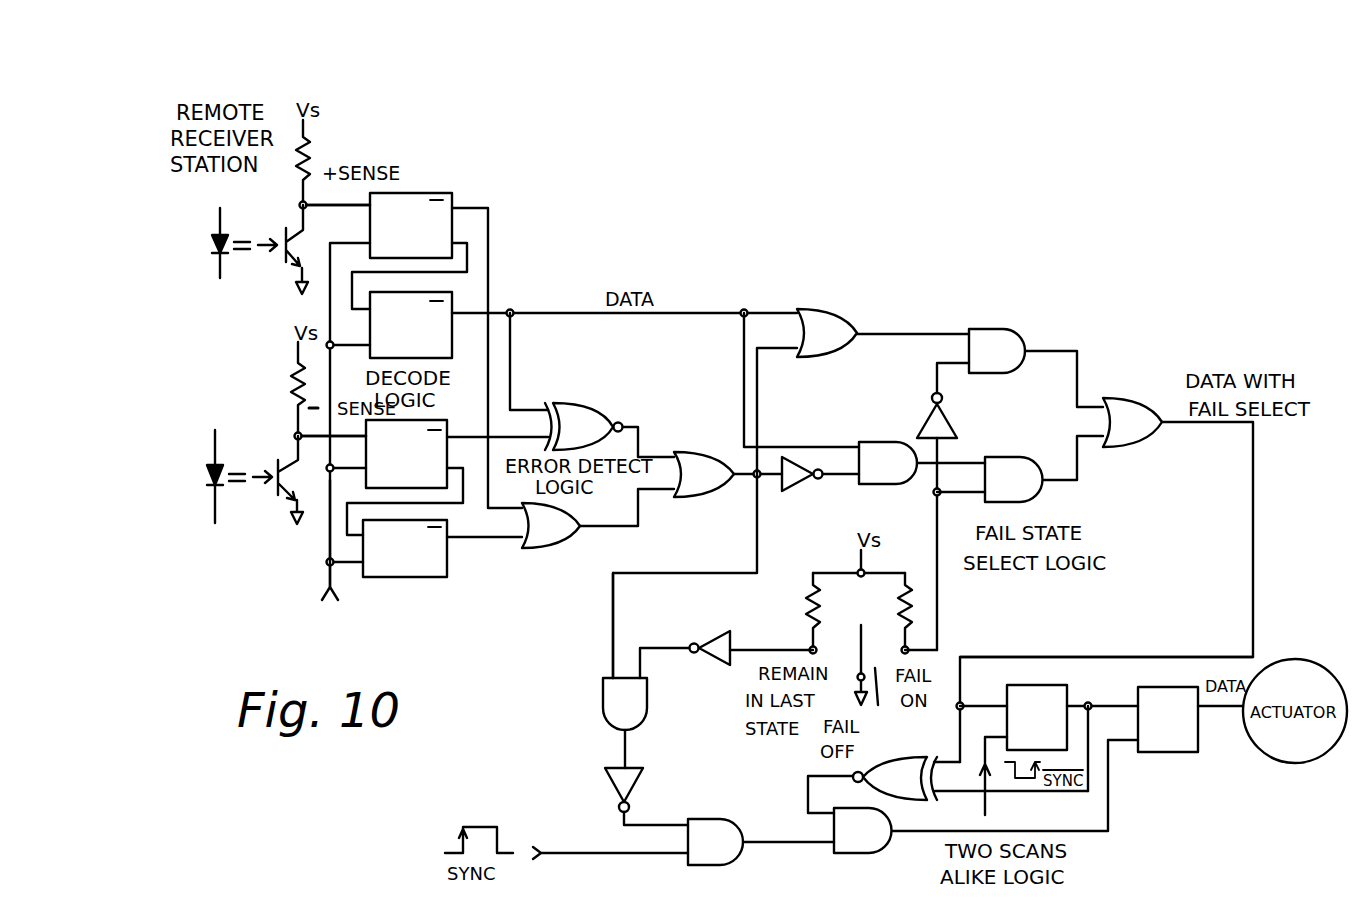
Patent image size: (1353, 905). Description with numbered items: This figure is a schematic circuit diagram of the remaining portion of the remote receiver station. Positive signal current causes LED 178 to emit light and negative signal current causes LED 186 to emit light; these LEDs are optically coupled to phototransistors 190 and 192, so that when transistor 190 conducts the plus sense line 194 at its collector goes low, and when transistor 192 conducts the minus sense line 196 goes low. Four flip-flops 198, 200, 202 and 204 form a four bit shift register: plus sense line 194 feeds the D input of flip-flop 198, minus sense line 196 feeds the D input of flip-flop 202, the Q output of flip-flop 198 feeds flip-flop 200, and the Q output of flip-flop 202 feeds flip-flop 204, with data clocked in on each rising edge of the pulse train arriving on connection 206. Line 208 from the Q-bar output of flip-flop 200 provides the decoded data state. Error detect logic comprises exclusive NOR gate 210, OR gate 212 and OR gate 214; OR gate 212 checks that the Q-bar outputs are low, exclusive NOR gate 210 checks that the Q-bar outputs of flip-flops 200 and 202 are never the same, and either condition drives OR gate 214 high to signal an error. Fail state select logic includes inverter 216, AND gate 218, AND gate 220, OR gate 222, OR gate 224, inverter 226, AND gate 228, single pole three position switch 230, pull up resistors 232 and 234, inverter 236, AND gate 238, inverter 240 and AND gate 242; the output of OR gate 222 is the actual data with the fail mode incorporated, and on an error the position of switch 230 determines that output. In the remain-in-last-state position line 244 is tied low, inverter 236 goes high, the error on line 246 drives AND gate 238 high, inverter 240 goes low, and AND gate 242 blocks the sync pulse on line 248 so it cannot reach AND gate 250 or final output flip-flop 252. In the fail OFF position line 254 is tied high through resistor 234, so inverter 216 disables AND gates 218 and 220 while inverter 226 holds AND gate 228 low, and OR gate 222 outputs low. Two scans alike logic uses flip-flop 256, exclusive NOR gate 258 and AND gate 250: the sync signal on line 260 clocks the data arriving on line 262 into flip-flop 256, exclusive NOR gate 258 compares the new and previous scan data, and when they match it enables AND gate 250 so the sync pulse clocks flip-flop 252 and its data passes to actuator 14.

The actuator 14 is at (1289, 760).
The LED 178 is at (207, 247).
The LED 186 is at (198, 472).
The phototransistor 190 is at (277, 230).
The phototransistor 192 is at (277, 458).
The plus sense line 194 is at (357, 222).
The minus sense line 196 is at (318, 438).
The flip-flop 198 is at (425, 193).
The flip-flop 200 is at (455, 303).
The flip-flop 202 is at (444, 429).
The flip-flop 204 is at (415, 577).
The connection 206 is at (324, 573).
The line 208 is at (562, 313).
The exclusive NOR gate 210 is at (585, 406).
The OR gate 212 is at (556, 546).
The OR gate 214 is at (708, 441).
The inverter 216 is at (790, 483).
The AND gate 218 is at (892, 483).
The AND gate 220 is at (1030, 447).
The OR gate 222 is at (1150, 387).
The OR gate 224 is at (838, 313).
The inverter 226 is at (926, 410).
The AND gate 228 is at (1022, 330).
The single pole three position switch 230 is at (888, 680).
The pull up resistor 232 is at (806, 598).
The pull up resistor 234 is at (895, 598).
The inverter 236 is at (719, 633).
The AND gate 238 is at (605, 697).
The inverter 240 is at (607, 780).
The AND gate 242 is at (708, 819).
The line 244 is at (760, 650).
The line 246 is at (612, 615).
The line 248 is at (592, 852).
The AND gate 250 is at (873, 847).
The final output flip-flop 252 is at (1170, 752).
The line 254 is at (937, 622).
The flip-flop 256 is at (1068, 691).
The exclusive NOR gate 258 is at (906, 765).
The line 260 is at (1004, 780).
The line 262 is at (1066, 656).